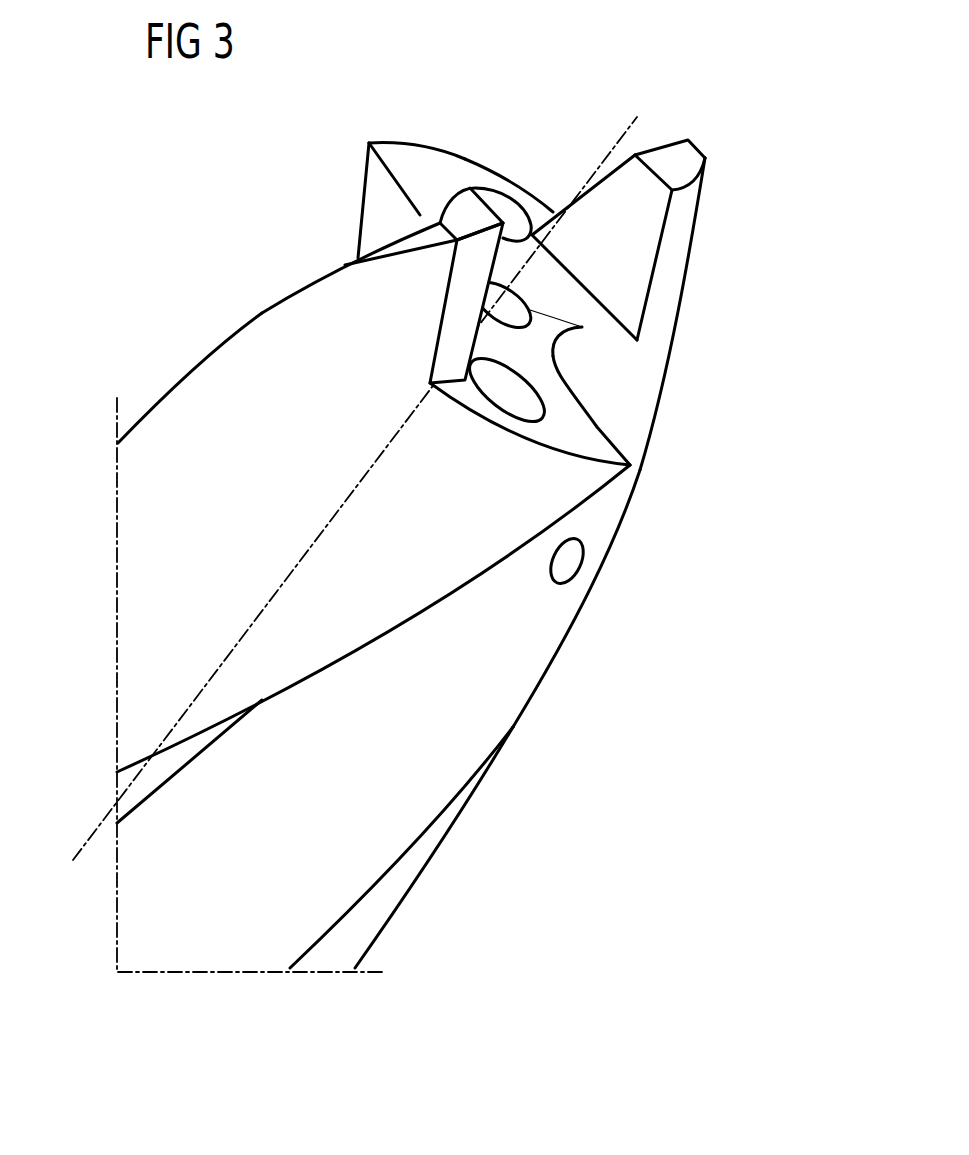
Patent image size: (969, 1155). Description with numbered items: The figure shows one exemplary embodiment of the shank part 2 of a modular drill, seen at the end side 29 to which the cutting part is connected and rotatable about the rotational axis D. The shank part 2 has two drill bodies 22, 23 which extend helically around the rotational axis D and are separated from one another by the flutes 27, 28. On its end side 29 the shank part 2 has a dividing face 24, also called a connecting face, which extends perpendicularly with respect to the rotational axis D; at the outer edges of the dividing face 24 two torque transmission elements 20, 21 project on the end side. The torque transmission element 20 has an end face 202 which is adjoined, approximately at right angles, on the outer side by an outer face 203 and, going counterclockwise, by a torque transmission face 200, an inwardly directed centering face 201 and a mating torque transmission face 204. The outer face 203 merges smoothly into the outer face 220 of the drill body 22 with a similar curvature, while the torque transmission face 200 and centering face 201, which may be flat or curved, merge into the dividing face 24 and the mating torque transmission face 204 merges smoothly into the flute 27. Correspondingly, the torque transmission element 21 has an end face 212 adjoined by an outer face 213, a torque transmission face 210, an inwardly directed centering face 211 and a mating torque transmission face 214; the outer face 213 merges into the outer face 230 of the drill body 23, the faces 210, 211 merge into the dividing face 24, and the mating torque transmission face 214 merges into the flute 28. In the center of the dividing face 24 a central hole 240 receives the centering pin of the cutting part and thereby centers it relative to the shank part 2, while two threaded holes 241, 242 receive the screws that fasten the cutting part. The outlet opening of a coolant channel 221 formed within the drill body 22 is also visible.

The shank part 2 is at (418, 760).
The torque transmission element 20 is at (688, 155).
The torque transmission face 200 is at (603, 162).
The centering face 201 is at (622, 250).
The end face 202 is at (671, 160).
The outer face 203 is at (697, 222).
The mating torque transmission face 204 is at (675, 252).
The torque transmission element 21 is at (394, 163).
The torque transmission face 210 is at (455, 300).
The centering face 211 is at (471, 212).
The end face 212 is at (433, 205).
The outer face 213 is at (433, 258).
The mating torque transmission face 214 is at (374, 203).
The drill body 22 is at (397, 890).
The outer face 220 is at (423, 853).
The coolant channel 221 is at (575, 562).
The drill body 23 is at (210, 413).
The outer face 230 is at (290, 395).
The dividing face 24 is at (535, 355).
The central hole 240 is at (582, 327).
The threaded hole 241 is at (506, 212).
The threaded hole 242 is at (548, 410).
The flute 27 is at (517, 618).
The flute 28 is at (372, 205).
The end side 29 is at (385, 150).
The rotational axis D is at (170, 727).